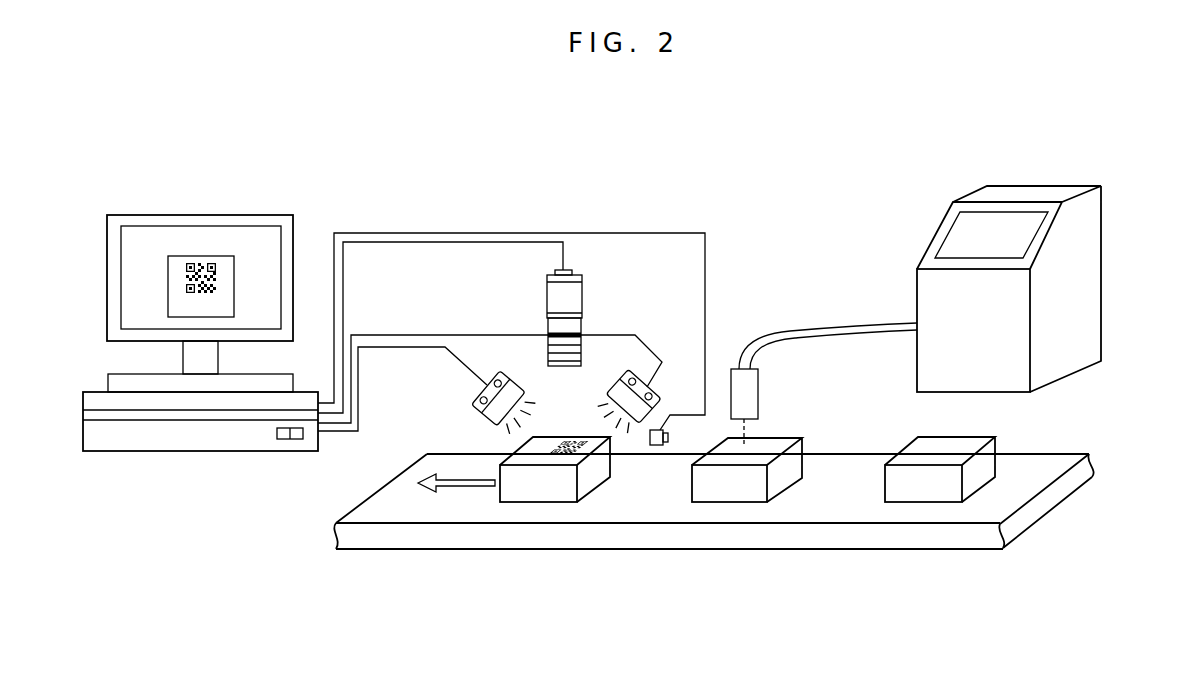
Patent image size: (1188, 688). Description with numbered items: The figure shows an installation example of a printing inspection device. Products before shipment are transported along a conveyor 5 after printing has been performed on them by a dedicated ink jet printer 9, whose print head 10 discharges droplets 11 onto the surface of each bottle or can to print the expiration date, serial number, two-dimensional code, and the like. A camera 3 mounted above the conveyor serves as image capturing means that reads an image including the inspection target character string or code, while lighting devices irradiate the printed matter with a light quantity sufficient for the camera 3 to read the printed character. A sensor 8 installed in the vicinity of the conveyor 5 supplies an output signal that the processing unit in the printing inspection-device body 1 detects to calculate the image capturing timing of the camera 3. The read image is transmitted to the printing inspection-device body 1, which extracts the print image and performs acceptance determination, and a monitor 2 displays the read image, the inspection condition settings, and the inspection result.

The printing inspection-device body 1 is at (174, 451).
The monitor 2 is at (288, 214).
The camera 3 is at (585, 290).
The conveyor 5 is at (402, 550).
The sensor 8 is at (668, 438).
The ink jet printer 9 is at (1101, 280).
The print head 10 is at (760, 387).
The droplets 11 is at (747, 430).